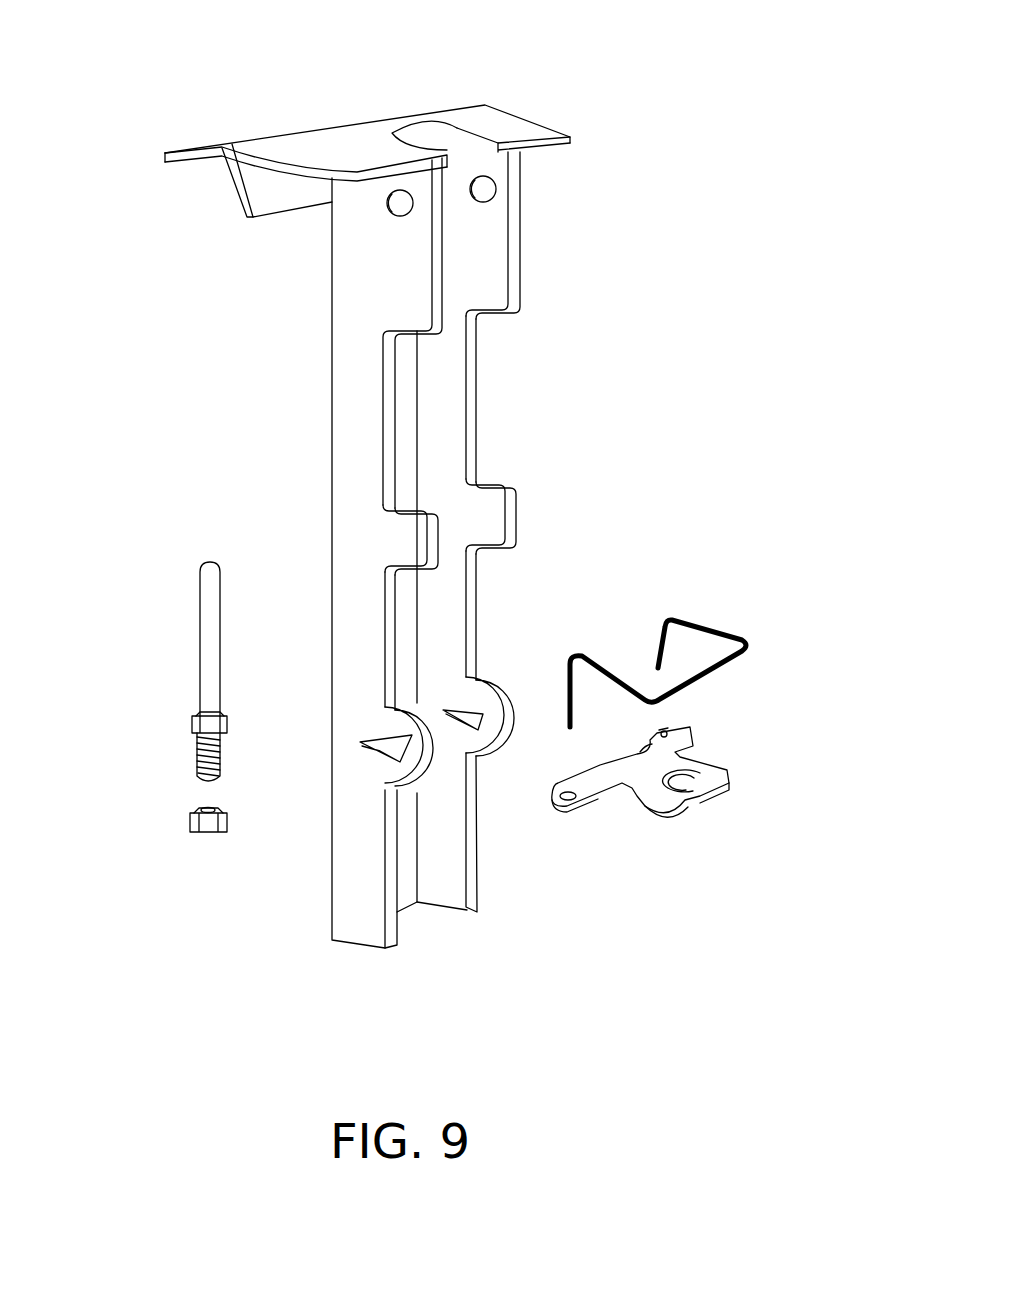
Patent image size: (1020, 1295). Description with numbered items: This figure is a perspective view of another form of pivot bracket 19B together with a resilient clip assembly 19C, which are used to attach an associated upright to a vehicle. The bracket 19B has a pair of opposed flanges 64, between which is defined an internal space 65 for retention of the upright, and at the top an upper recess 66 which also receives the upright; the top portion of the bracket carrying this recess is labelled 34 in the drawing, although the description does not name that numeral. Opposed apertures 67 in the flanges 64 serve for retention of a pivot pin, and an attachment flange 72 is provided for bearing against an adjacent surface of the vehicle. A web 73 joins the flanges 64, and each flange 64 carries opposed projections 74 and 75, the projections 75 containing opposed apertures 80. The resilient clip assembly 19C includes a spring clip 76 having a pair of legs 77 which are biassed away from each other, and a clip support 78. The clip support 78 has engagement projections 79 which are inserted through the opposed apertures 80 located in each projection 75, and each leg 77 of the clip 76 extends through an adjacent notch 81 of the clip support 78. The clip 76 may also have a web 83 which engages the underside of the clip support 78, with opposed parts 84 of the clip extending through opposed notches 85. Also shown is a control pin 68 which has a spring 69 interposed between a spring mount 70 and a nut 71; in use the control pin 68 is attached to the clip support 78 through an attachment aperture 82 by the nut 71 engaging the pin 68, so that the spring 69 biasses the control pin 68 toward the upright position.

The top plate 34 is at (218, 149).
The upper recess 66 is at (435, 146).
The opposed apertures 67 is at (385, 205).
The attachment flange 72 is at (267, 182).
The opposed flanges 64 is at (383, 300).
The pivot bracket 19B is at (550, 393).
The internal space 65 is at (452, 442).
The projection 74 is at (488, 514).
The web 73 is at (402, 890).
The projection 75 is at (480, 700).
The opposed apertures 80 is at (378, 747).
The control pin 68 is at (203, 627).
The spring 69 is at (197, 754).
The spring mount 70 is at (227, 724).
The nut 71 is at (210, 828).
The resilient clip assembly 19C is at (790, 704).
The spring clip 76 is at (746, 613).
The legs 77 is at (567, 693).
The opposed parts 84 is at (700, 622).
The web 83 is at (703, 684).
The clip support 78 is at (690, 777).
The engagement projections 79 is at (690, 729).
The notch 81 is at (604, 752).
The attachment aperture 82 is at (560, 783).
The opposed notches 85 is at (688, 757).